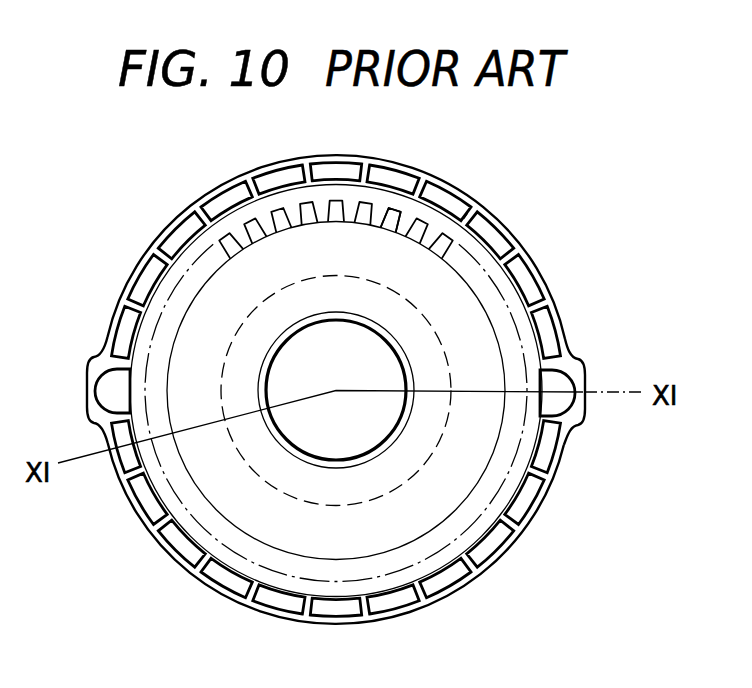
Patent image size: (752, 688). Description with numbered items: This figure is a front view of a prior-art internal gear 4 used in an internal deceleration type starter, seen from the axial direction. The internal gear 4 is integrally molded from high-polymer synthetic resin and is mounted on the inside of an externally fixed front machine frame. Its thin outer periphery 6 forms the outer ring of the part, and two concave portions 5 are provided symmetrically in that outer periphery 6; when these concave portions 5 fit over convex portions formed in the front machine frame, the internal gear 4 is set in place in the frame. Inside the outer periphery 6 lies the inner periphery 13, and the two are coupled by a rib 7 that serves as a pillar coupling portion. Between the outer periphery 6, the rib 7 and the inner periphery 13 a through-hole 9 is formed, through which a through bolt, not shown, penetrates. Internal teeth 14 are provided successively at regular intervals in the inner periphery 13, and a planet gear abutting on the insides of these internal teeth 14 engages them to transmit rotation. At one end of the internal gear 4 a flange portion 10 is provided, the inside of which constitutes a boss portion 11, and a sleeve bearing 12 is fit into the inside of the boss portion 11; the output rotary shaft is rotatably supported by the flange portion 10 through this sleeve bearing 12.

The internal gear 4 is at (150, 250).
The concave portion 5 is at (571, 424).
The outer periphery 6 is at (200, 212).
The rib 7 is at (457, 222).
The through-hole 9 is at (560, 387).
The flange portion 10 is at (222, 505).
The boss portion 11 is at (318, 500).
The sleeve bearing 12 is at (310, 460).
The inner periphery 13 is at (325, 195).
The internal teeth 14 is at (378, 215).